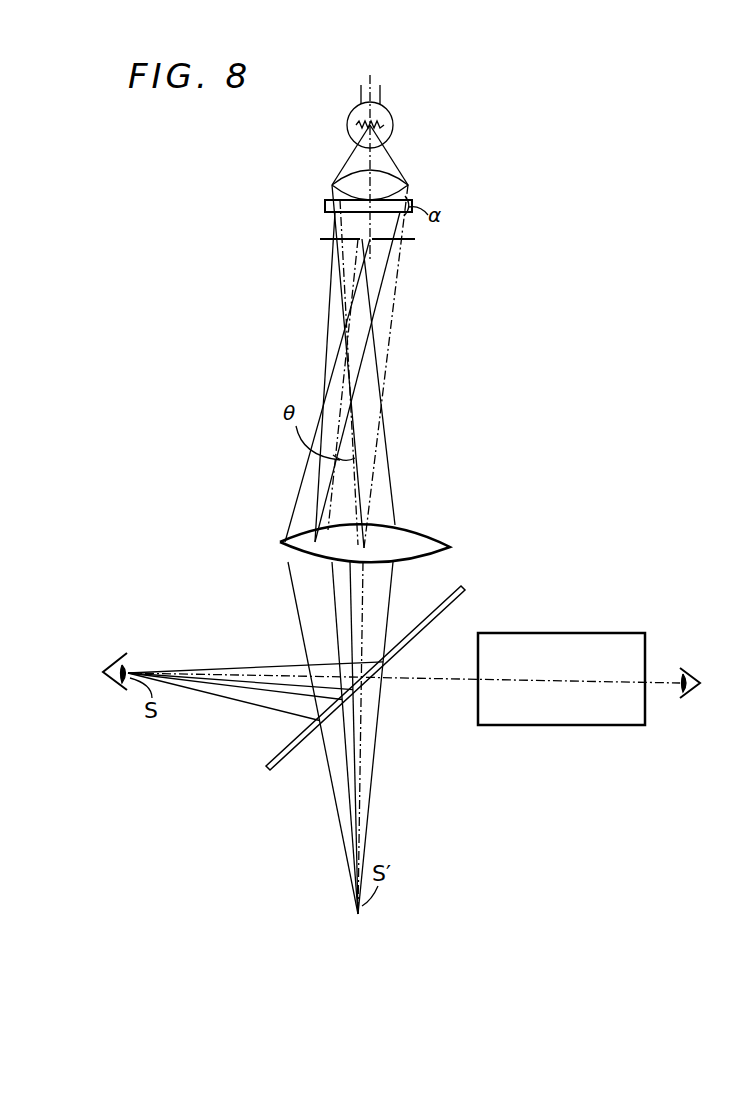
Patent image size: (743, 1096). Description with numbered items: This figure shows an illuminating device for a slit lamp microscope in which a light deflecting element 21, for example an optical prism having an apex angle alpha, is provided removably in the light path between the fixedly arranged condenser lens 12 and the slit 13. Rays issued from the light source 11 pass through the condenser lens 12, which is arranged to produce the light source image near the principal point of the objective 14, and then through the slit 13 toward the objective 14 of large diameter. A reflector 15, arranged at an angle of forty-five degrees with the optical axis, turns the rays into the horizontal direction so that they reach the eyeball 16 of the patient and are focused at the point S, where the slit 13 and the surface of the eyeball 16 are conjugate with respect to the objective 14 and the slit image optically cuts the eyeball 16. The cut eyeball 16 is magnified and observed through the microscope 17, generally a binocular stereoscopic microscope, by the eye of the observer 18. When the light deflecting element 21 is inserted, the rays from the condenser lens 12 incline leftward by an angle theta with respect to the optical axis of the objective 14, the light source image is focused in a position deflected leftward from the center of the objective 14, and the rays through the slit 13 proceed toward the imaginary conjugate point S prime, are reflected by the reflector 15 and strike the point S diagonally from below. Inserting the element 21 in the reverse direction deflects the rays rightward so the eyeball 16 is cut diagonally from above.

The light source 11 is at (387, 131).
The condenser lens 12 is at (399, 176).
The light deflecting element 21 is at (325, 207).
The slit 13 is at (373, 235).
The objective 14 is at (446, 542).
The reflector 15 is at (463, 588).
The eyeball 16 is at (128, 662).
The microscope 17 is at (585, 647).
The eye of the observer 18 is at (680, 670).